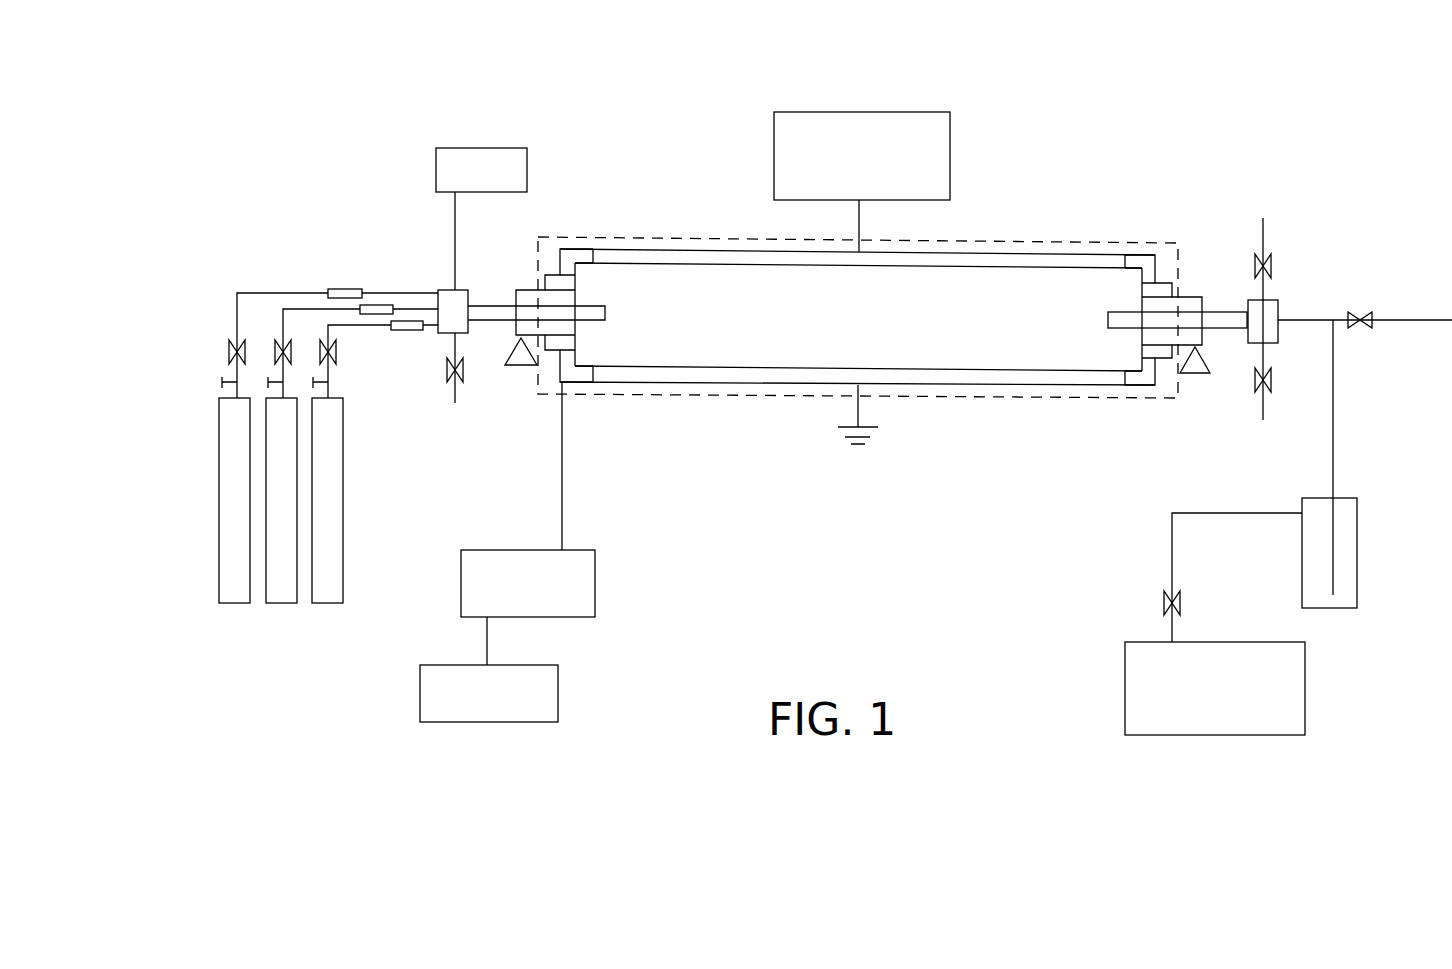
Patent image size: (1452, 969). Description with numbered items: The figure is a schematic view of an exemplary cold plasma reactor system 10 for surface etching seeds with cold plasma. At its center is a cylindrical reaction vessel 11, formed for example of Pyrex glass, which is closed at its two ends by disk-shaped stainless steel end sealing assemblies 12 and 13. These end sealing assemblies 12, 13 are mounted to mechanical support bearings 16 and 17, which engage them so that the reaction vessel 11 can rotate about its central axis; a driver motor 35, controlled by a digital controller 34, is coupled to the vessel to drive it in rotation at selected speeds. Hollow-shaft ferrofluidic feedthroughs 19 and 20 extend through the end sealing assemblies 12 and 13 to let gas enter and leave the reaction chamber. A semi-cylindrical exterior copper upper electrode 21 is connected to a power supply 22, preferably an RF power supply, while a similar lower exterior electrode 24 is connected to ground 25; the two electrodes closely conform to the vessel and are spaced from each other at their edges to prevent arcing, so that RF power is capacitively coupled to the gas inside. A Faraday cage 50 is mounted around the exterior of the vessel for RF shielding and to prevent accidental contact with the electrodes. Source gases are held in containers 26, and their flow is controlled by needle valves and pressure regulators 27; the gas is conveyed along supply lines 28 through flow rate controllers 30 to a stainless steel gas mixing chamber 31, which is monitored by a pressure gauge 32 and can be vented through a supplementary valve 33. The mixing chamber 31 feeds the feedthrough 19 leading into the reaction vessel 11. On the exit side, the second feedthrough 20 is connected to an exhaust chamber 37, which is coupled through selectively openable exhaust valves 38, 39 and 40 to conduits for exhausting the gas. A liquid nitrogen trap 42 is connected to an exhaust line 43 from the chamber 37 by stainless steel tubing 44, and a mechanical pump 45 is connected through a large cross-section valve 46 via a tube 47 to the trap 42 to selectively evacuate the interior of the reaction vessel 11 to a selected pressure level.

The cold plasma reactor system 10 is at (748, 400).
The cylindrical reaction vessel 11 is at (676, 280).
The end sealing assembly 12 is at (580, 249).
The end sealing assembly 13 is at (1138, 256).
The mechanical support bearing 16 is at (518, 360).
The mechanical support bearing 17 is at (1195, 375).
The ferrofluidic feedthrough 19 is at (491, 300).
The ferrofluidic feedthrough 20 is at (1185, 297).
The upper electrode 21 is at (672, 249).
The power supply 22 is at (932, 112).
The lower electrode 24 is at (950, 370).
The ground 25 is at (845, 438).
The containers 26 is at (313, 560).
The needle valves and pressure regulators 27 is at (320, 358).
The supply lines 28 is at (327, 330).
The flow rate controllers 30 is at (405, 321).
The gas mixing chamber 31 is at (446, 290).
The pressure gauge 32 is at (436, 170).
The supplementary valve 33 is at (447, 378).
The digital controller 34 is at (447, 717).
The driver motor 35 is at (572, 612).
The exhaust chamber 37 is at (1253, 310).
The exhaust valve 38 is at (1267, 258).
The exhaust valve 39 is at (1257, 385).
The exhaust valve 40 is at (1366, 312).
The liquid nitrogen trap 42 is at (1357, 562).
The exhaust line 43 is at (1312, 318).
The stainless steel tubing 44 is at (1333, 435).
The mechanical pump 45 is at (1170, 737).
The large cross-section valve 46 is at (1180, 605).
The tube 47 is at (1237, 513).
The Faraday cage 50 is at (1032, 398).